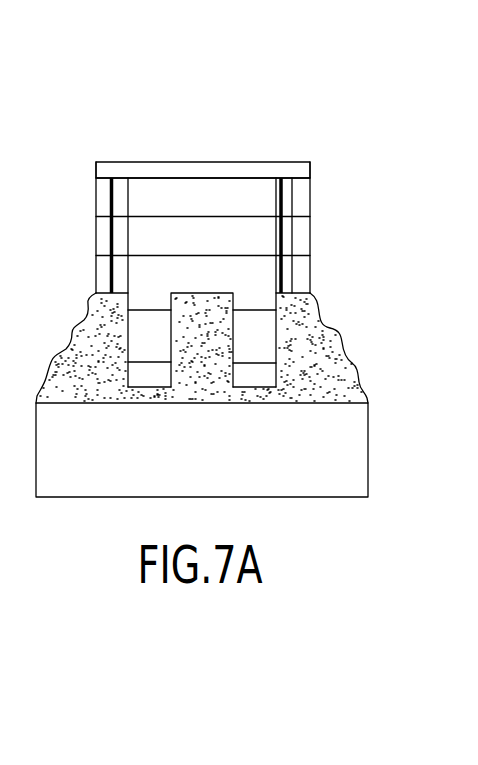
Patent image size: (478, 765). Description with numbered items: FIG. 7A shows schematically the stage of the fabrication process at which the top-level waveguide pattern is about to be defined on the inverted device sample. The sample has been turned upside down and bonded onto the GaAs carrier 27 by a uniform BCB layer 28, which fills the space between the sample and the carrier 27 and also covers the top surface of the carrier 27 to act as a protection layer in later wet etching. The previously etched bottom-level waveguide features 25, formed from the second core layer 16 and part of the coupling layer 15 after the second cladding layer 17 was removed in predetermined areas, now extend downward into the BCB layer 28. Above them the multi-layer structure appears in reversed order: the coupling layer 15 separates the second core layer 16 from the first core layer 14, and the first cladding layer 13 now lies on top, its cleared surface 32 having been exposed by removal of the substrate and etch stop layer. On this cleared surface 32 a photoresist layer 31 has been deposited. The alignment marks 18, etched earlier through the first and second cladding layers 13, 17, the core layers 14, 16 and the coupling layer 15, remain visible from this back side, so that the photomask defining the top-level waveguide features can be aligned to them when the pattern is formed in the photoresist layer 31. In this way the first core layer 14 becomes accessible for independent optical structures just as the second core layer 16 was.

The first cladding layer 13 is at (98, 202).
The first core layer 14 is at (98, 240).
The coupling layer 15 is at (98, 274).
The second core layer 16 is at (265, 340).
The second cladding layer 17 is at (265, 373).
The alignment marks 18 is at (121, 186).
The waveguide features 25 is at (148, 386).
The carrier 27 is at (325, 487).
The BCB layer 28 is at (198, 358).
The photoresist layer 31 is at (237, 165).
The cleared surface 32 is at (192, 177).